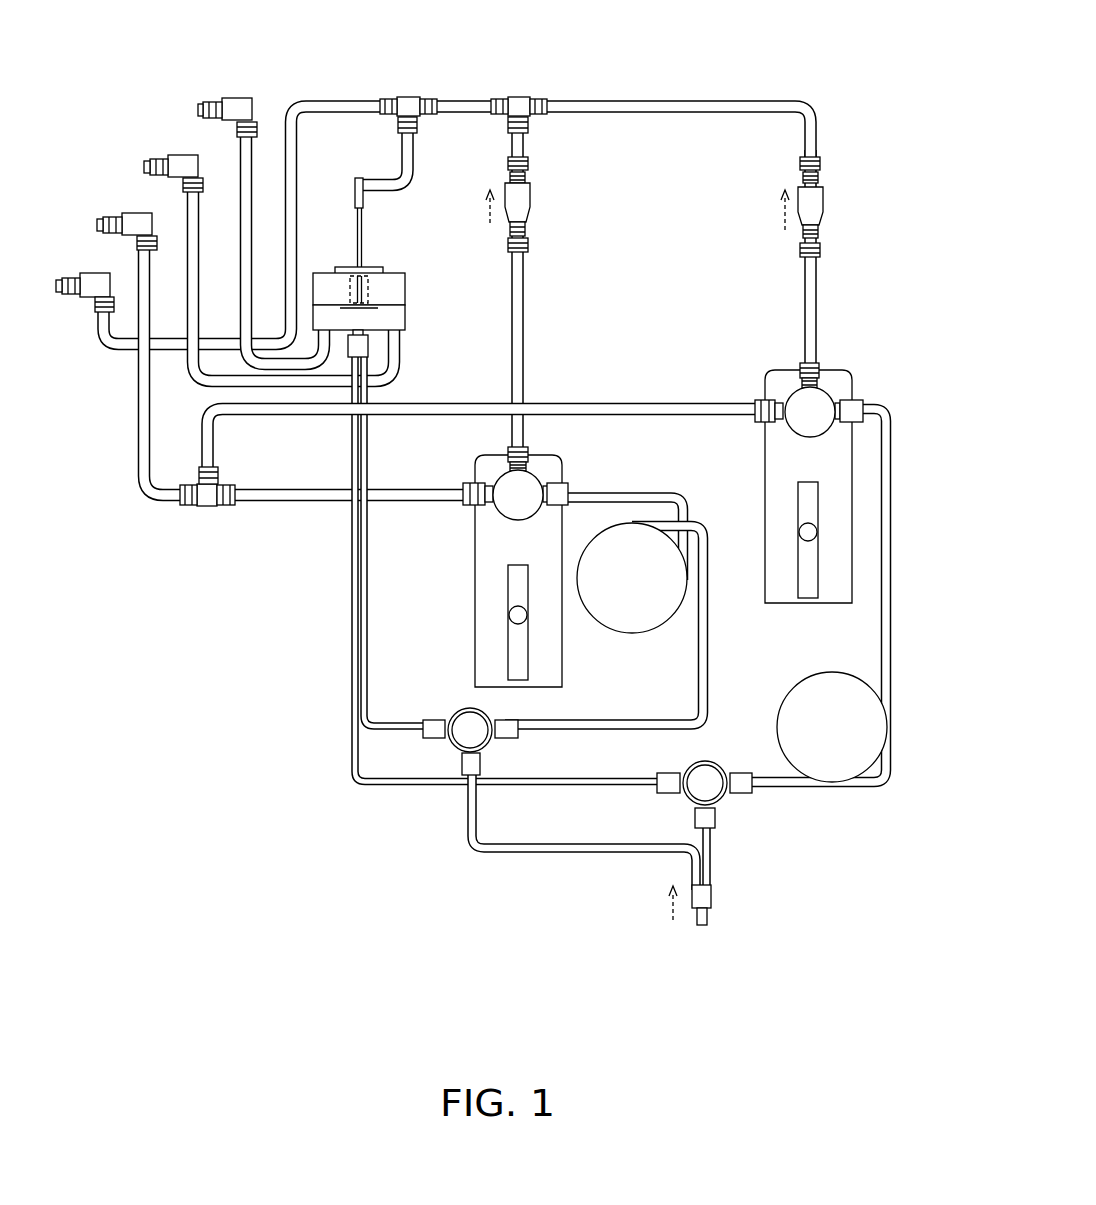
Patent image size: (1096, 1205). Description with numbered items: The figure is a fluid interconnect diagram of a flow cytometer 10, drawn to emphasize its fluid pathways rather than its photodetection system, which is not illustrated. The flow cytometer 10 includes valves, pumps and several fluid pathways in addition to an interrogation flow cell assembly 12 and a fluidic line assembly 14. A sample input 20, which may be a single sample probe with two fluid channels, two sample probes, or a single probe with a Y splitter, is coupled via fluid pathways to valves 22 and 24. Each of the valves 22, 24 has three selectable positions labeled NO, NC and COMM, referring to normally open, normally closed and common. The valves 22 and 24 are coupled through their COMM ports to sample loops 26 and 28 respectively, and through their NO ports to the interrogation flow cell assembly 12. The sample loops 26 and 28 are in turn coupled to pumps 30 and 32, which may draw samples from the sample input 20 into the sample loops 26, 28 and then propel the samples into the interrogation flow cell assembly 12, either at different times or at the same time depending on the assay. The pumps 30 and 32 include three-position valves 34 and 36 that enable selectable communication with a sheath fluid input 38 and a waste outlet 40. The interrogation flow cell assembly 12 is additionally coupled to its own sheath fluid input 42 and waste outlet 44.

The flow cytometer 10 is at (483, 511).
The interrogation flow cell assembly 12 is at (405, 287).
The fluidic line assembly 14 is at (405, 322).
The sample input 20 is at (709, 917).
The valve 22 is at (486, 744).
The valve 24 is at (698, 766).
The sample loop 26 is at (631, 634).
The sample loop 28 is at (827, 672).
The pump 30 is at (542, 567).
The pump 32 is at (833, 483).
The 3-position valve 34 is at (505, 508).
The 3-position valve 36 is at (797, 425).
The sheath fluid input 38 is at (111, 216).
The waste outlet 40 is at (69, 276).
The sheath fluid input 42 is at (158, 158).
The waste outlet 44 is at (211, 100).